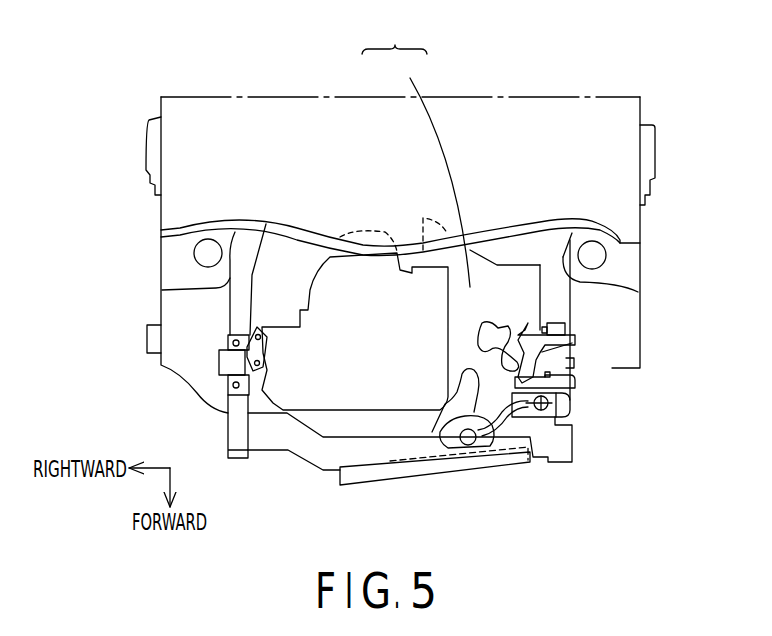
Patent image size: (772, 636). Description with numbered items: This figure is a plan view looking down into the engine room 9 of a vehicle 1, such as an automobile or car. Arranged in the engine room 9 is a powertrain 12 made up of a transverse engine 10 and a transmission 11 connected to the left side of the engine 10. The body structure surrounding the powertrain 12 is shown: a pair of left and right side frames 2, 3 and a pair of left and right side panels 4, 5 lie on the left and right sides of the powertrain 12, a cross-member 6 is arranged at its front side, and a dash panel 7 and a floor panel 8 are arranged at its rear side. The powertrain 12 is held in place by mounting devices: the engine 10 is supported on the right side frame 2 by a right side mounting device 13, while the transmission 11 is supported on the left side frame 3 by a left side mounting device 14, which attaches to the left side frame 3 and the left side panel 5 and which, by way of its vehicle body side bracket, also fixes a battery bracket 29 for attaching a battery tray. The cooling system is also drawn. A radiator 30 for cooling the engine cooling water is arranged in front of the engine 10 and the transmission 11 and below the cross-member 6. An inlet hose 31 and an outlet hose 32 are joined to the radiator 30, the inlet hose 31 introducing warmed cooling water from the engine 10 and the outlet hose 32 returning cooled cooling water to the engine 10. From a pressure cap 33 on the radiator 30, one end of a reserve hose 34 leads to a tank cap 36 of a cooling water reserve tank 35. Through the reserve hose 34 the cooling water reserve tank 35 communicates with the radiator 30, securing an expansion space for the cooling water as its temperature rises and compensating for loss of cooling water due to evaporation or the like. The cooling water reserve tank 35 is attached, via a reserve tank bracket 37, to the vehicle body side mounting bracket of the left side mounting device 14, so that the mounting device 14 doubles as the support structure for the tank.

The vehicle 1 is at (657, 66).
The right side frame 2 is at (230, 294).
The left side frame 3 is at (560, 290).
The right side panel 4 is at (217, 320).
The left side panel 5 is at (583, 310).
The cross-member 6 is at (307, 453).
The dash panel 7 is at (303, 215).
The floor panel 8 is at (529, 135).
The engine room 9 is at (280, 267).
The transverse engine 10 is at (366, 275).
The transmission 11 is at (434, 172).
The powertrain 12 is at (394, 38).
The right side mounting device 13 is at (220, 379).
The left side mounting device 14 is at (574, 365).
The battery bracket 29 is at (575, 345).
The radiator 30 is at (385, 477).
The inlet hose 31 is at (440, 430).
The outlet hose 32 is at (497, 420).
The pressure cap 33 is at (469, 445).
The reserve hose 34 is at (540, 410).
The cooling water reserve tank 35 is at (575, 395).
The tank cap 36 is at (566, 410).
The reserve tank bracket 37 is at (579, 388).